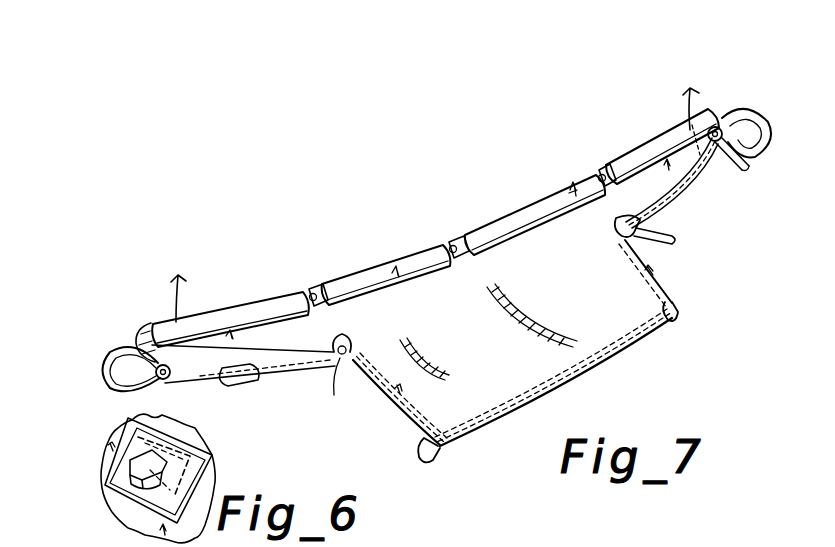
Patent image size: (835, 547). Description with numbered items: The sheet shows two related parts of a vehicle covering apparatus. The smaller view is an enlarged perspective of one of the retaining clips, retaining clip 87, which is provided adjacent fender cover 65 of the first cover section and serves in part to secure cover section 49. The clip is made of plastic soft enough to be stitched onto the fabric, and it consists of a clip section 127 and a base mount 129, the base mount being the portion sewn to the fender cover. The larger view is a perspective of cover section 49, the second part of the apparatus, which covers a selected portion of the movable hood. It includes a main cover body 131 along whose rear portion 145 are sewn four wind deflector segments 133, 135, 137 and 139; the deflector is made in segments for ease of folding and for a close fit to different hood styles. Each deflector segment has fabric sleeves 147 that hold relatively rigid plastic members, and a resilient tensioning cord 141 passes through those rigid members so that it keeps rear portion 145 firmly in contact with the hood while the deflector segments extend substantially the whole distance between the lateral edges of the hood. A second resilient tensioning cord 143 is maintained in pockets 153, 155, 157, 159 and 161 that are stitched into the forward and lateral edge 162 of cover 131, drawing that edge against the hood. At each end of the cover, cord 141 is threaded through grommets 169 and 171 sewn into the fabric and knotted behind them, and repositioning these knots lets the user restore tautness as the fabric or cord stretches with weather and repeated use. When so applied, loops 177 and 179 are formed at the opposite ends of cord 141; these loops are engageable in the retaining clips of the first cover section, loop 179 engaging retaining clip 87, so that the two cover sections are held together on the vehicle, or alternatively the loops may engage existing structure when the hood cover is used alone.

In FIG. 7, the cover section 49 is at (662, 305).
In FIG. 6, the fender cover 65 is at (117, 503).
In FIG. 6, the retaining clip 87 is at (162, 492).
In FIG. 6, the clip section 127 is at (130, 467).
In FIG. 6, the base mount 129 is at (172, 467).
In FIG. 7, the main cover body 131 is at (608, 330).
In FIG. 7, the wind deflector segment 133 is at (205, 317).
In FIG. 7, the wind deflector segment 135 is at (357, 273).
In FIG. 7, the wind deflector segment 137 is at (460, 232).
In FIG. 7, the wind deflector segment 139 is at (603, 167).
In FIG. 7, the resilient tensioning cord 141 is at (110, 352).
In FIG. 7, the resilient tensioning cord 143 is at (170, 290).
In FIG. 7, the rear portion 145 is at (330, 283).
In FIG. 7, the fabric sleeve 147 is at (195, 323).
In FIG. 7, the pocket 153 is at (293, 370).
In FIG. 7, the pocket 155 is at (400, 427).
In FIG. 7, the pocket 157 is at (570, 388).
In FIG. 7, the pocket 159 is at (657, 270).
In FIG. 7, the pocket 161 is at (687, 203).
In FIG. 7, the forward and lateral edge 162 is at (502, 423).
In FIG. 7, the grommet 169 is at (133, 350).
In FIG. 7, the grommet 171 is at (722, 150).
In FIG. 7, the loop 177 is at (105, 380).
In FIG. 7, the loop 179 is at (763, 143).